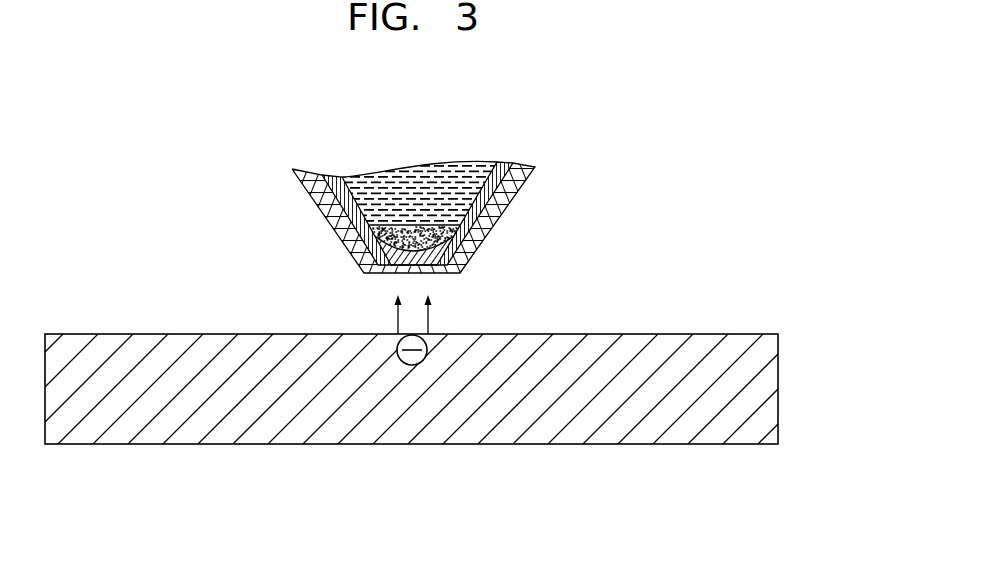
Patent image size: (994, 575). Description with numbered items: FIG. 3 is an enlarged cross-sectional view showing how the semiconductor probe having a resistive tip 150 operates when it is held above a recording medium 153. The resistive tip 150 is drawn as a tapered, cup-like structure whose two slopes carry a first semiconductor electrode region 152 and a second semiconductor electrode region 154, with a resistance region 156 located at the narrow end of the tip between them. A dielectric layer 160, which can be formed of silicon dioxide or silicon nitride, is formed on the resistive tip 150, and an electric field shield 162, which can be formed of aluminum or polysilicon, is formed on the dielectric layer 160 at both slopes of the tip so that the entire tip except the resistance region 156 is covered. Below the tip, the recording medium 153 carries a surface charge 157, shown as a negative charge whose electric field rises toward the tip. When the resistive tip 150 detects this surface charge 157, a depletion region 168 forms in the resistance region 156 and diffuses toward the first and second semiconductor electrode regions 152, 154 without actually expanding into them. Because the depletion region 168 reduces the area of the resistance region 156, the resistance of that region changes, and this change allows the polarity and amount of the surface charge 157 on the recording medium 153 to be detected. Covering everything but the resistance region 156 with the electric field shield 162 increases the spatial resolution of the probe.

The resistive tip 150 is at (346, 150).
The first semiconductor electrode region 152 is at (326, 198).
The recording medium 153 is at (768, 397).
The second semiconductor electrode region 154 is at (517, 172).
The resistance region 156 is at (373, 238).
The surface charge 157 is at (428, 347).
The dielectric layer 160 is at (498, 206).
The electric field shield 162 is at (483, 238).
The depletion region 168 is at (383, 259).